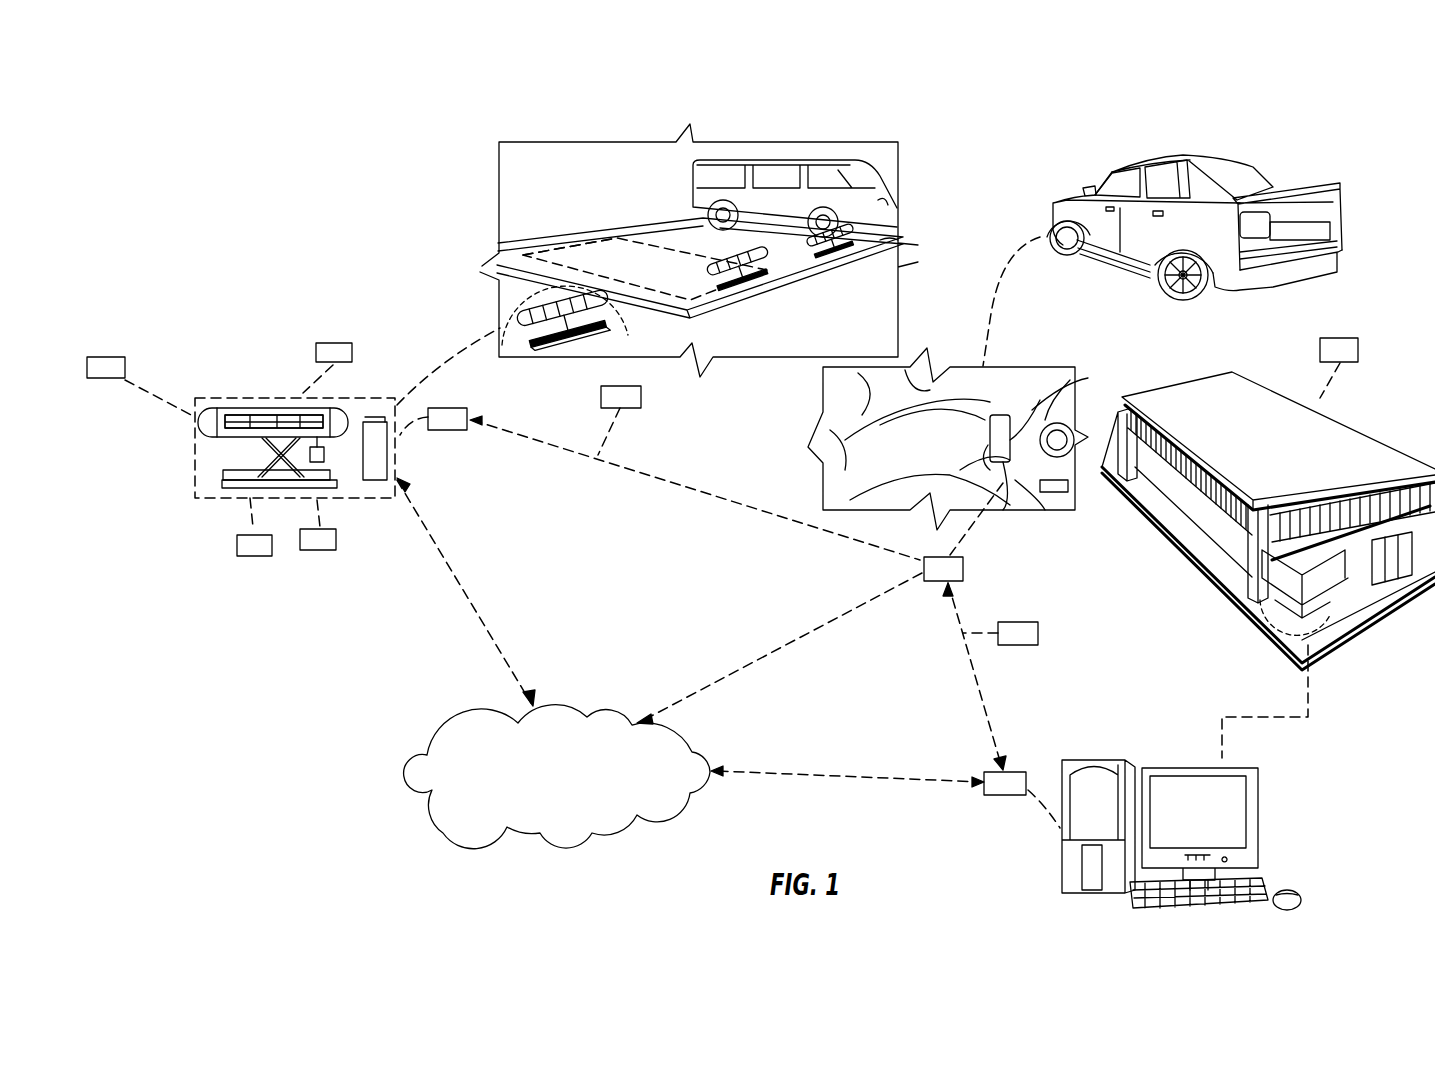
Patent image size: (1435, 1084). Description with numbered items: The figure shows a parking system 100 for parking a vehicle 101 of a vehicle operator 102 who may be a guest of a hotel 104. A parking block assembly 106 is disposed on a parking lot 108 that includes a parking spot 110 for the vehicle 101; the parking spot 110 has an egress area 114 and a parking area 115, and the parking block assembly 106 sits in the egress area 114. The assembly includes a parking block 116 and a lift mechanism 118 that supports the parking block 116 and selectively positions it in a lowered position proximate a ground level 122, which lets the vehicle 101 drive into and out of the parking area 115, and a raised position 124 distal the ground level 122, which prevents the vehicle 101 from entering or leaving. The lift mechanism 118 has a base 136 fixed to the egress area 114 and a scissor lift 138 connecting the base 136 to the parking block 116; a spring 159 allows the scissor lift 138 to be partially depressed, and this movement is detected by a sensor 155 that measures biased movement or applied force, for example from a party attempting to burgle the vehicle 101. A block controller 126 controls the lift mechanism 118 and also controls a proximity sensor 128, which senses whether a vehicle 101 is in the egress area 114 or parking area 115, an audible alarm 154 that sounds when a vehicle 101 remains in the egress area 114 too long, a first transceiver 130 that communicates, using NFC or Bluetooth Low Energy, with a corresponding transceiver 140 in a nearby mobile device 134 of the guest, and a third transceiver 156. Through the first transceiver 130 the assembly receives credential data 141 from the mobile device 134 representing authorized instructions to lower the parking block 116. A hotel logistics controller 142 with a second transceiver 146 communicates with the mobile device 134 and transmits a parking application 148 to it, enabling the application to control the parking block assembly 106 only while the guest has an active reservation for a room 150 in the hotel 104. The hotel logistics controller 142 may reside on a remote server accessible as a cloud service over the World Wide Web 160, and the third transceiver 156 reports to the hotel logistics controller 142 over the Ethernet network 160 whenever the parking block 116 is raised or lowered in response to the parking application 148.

The parking system 100 is at (463, 207).
The vehicle 101 is at (1207, 161).
The vehicle operator 102 is at (840, 482).
The hotel 104 is at (1333, 435).
The parking block assembly 106 is at (258, 398).
The parking lot 108 is at (1012, 163).
The parking spot 110 is at (706, 280).
The egress area 114 is at (703, 287).
The parking area 115 is at (606, 258).
The parking block 116 is at (223, 410).
The lift mechanism 118 is at (198, 508).
The ground level 122 is at (898, 252).
The raised position 124 is at (150, 527).
The block controller 126 is at (372, 480).
The sensor 128 is at (243, 557).
The first transceiver 130 is at (445, 431).
The mobile device 134 is at (1088, 378).
The base 136 is at (207, 487).
The scissor lift 138 is at (262, 455).
The NFC transceiver 140 is at (964, 567).
The credential data 141 is at (641, 398).
The hotel logistics controller 142 is at (1292, 815).
The second transceiver 146 is at (1005, 797).
The parking application 148 is at (997, 417).
The room 150 is at (1358, 352).
The audible alarm 154 is at (110, 358).
The sensor 155 is at (310, 552).
The third transceiver 156 is at (333, 340).
The spring 159 is at (327, 453).
The Ethernet network 160 is at (598, 817).